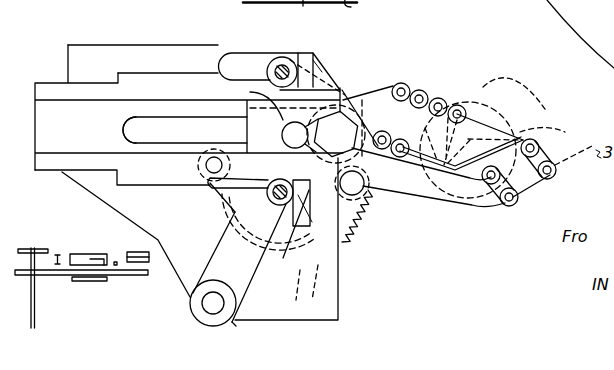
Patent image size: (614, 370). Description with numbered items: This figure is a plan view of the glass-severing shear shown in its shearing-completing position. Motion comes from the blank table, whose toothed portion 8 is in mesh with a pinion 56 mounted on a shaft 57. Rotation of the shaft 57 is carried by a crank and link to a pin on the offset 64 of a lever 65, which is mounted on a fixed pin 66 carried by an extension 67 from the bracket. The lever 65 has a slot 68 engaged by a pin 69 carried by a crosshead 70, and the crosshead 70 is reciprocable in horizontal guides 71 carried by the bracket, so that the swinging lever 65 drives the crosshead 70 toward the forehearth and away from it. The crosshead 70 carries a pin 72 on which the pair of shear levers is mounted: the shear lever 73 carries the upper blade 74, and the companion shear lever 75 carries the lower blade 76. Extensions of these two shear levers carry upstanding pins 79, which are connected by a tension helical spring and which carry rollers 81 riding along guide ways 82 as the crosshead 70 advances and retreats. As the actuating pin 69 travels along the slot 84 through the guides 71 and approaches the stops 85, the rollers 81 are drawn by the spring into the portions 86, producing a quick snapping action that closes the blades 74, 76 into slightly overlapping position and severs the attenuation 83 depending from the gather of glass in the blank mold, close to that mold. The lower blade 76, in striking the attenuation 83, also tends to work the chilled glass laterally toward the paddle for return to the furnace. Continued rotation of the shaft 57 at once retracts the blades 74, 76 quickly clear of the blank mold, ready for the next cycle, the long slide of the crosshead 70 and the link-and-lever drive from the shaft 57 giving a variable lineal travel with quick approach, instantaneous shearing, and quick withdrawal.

The toothed portion 8 is at (313, 270).
The pinion 56 is at (368, 216).
The shaft 57 is at (290, 240).
The offset 64 is at (212, 205).
The lever 65 is at (225, 242).
The fixed pin 66 is at (204, 300).
The extension 67 is at (240, 328).
The slot 68 is at (282, 138).
The pin 69 is at (262, 92).
The crosshead 70 is at (233, 123).
The horizontal guides 71 is at (94, 108).
The pin 72 is at (352, 96).
The shear lever 73 is at (383, 88).
The upper blade 74 is at (452, 107).
The companion shear lever 75 is at (452, 217).
The lower blade 76 is at (524, 200).
The upstanding pins 79 is at (267, 68).
The rollers 81 is at (314, 60).
The guide ways 82 is at (205, 71).
The attenuation 83 is at (500, 124).
The slot 84 is at (127, 140).
The stops 85 is at (343, 63).
The portions 86 is at (222, 60).